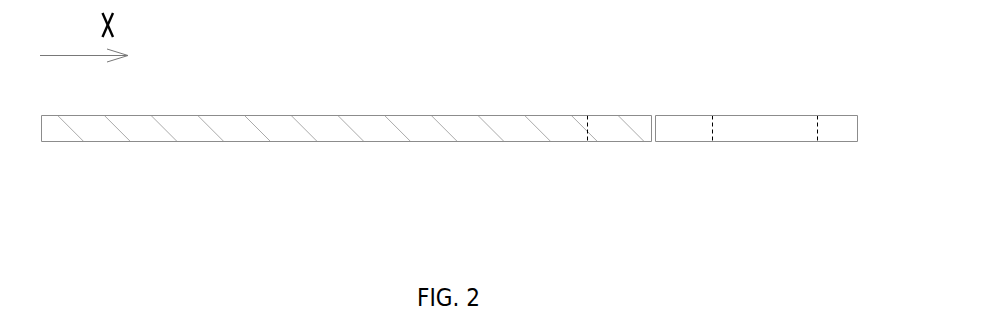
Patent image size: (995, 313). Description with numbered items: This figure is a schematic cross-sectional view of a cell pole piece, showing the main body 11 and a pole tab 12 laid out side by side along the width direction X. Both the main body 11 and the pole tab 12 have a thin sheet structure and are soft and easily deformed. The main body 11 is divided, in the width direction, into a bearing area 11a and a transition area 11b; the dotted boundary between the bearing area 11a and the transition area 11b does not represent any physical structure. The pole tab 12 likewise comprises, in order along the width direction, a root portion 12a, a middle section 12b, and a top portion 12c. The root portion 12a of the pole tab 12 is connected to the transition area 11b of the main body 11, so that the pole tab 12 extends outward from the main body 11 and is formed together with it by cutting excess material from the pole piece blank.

The main body 11 is at (347, 199).
The bearing area 11a is at (525, 131).
The transition area 11b is at (603, 130).
The pole tab 12 is at (757, 199).
The root portion 12a is at (682, 131).
The middle section 12b is at (755, 131).
The top portion 12c is at (834, 131).